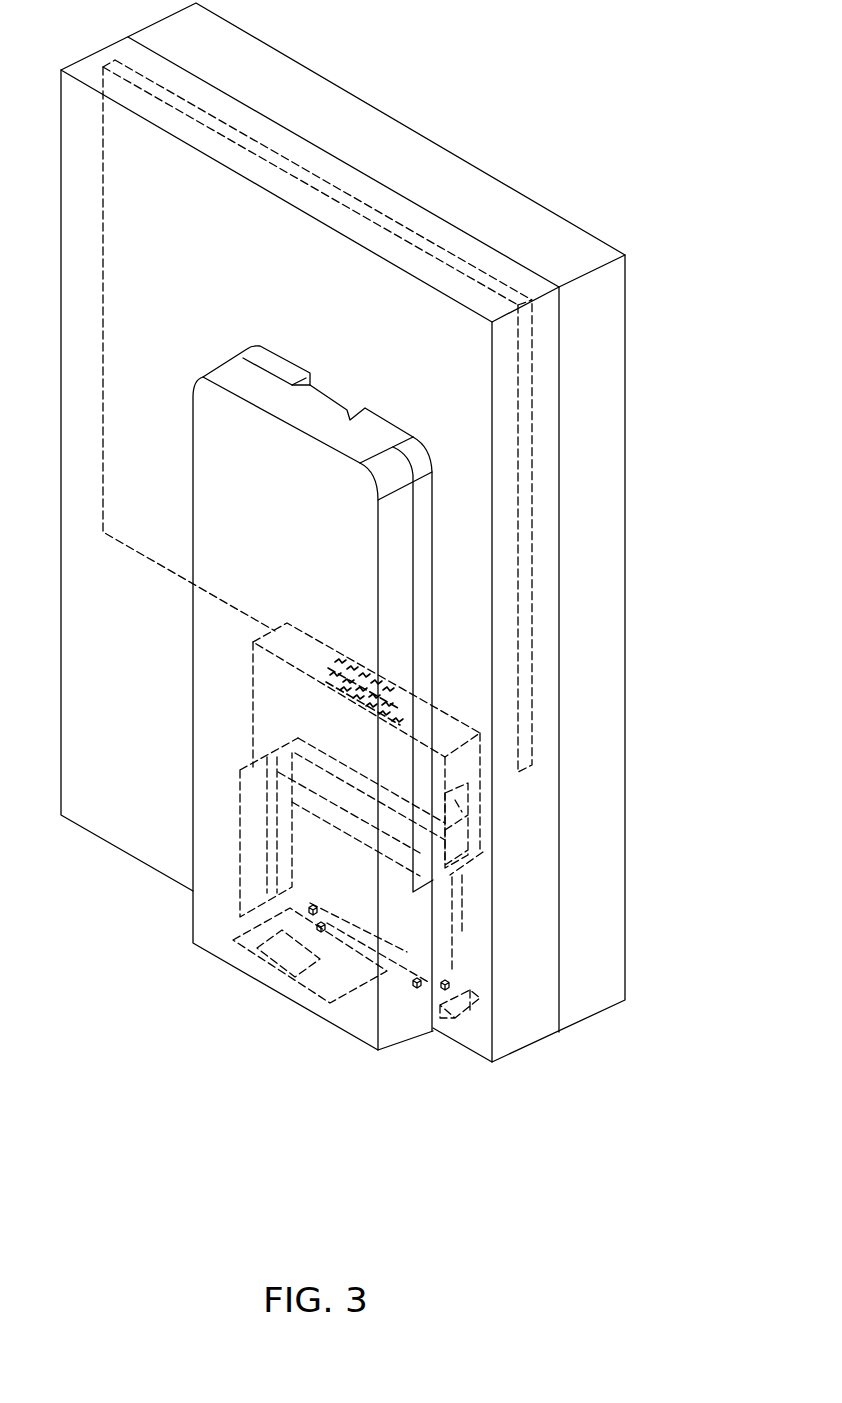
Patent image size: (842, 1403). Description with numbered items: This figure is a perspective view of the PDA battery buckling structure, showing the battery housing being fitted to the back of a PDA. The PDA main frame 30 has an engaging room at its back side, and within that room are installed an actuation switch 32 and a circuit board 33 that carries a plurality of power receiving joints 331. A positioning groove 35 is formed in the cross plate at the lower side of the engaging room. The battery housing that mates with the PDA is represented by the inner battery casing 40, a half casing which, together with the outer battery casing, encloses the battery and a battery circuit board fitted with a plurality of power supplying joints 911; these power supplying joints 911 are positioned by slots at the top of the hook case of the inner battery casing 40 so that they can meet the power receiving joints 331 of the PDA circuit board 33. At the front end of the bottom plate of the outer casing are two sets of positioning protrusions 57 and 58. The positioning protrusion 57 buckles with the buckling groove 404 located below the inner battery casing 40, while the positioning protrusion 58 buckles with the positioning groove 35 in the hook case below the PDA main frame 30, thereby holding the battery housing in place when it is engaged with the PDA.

The PDA main frame 30 is at (410, 130).
The circuit board 33 is at (532, 630).
The power receiving joints 331 is at (387, 693).
The power supplying joints 911 is at (410, 710).
The actuation switch 32 is at (483, 803).
The positioning protrusion 57 is at (430, 975).
The positioning protrusion 58 is at (449, 984).
The buckling groove 404 is at (415, 986).
The positioning groove 35 is at (443, 993).
The inner battery casing 40 is at (282, 998).